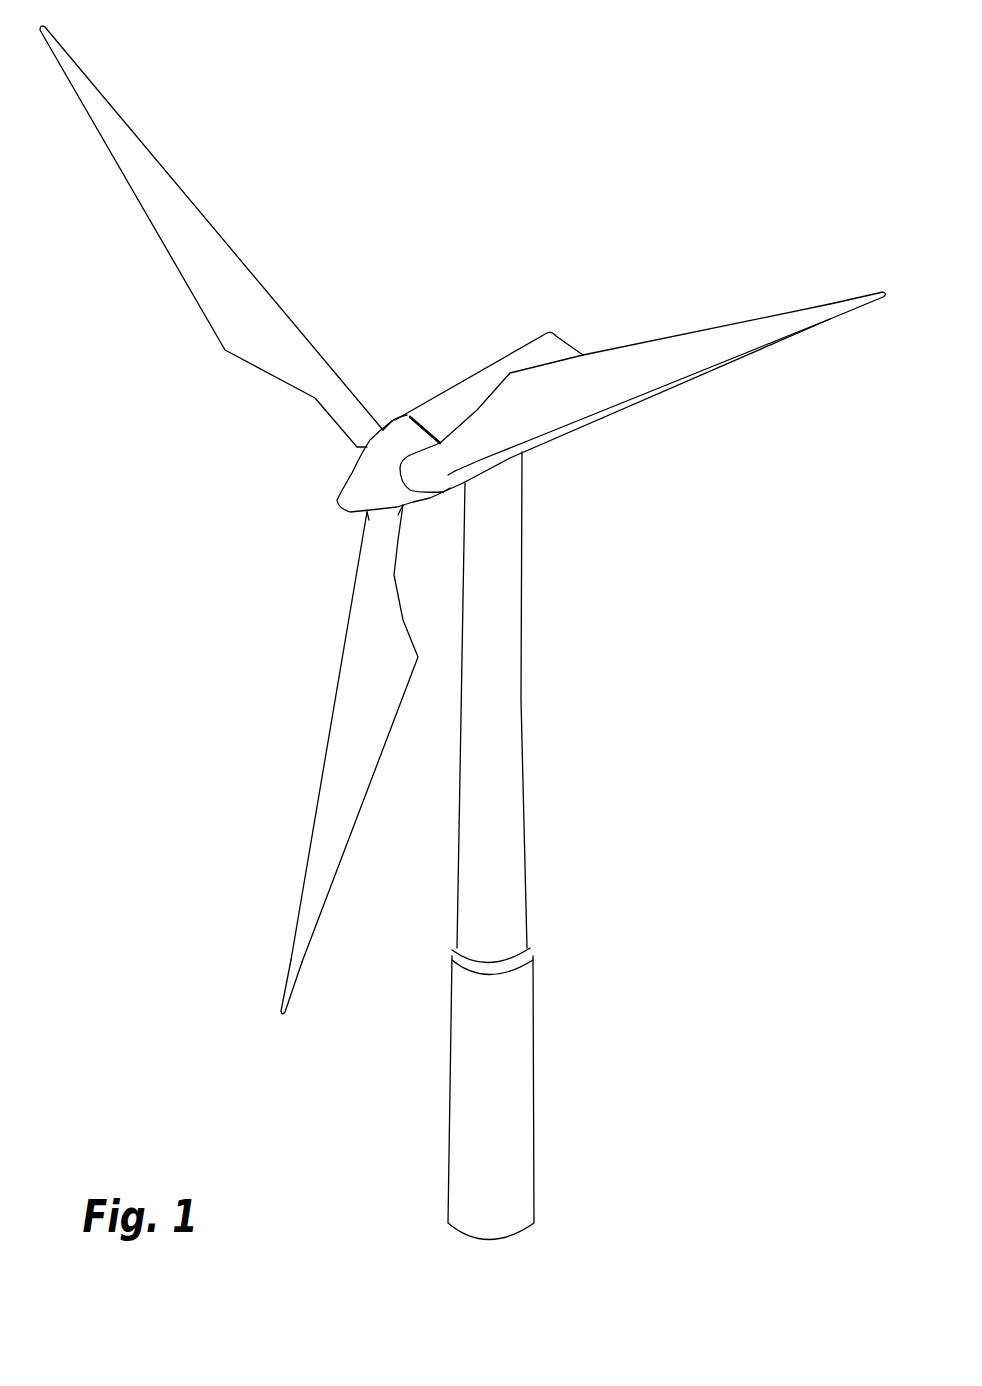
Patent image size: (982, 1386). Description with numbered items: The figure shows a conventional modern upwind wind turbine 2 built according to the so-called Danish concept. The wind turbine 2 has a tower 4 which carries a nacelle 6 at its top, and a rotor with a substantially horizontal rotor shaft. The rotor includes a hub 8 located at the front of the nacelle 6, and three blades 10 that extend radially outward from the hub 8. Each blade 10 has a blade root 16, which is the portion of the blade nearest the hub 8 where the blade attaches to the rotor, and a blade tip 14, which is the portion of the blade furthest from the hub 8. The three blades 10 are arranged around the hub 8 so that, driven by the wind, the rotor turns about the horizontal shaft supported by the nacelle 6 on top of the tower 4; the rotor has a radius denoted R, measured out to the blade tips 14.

The wind turbine 2 is at (630, 786).
The tower 4 is at (506, 702).
The nacelle 6 is at (456, 405).
The hub 8 is at (354, 490).
The blades 10 is at (230, 356).
The blade tip 14 is at (97, 84).
The blade root 16 is at (362, 450).